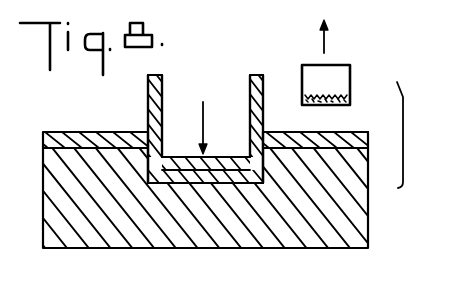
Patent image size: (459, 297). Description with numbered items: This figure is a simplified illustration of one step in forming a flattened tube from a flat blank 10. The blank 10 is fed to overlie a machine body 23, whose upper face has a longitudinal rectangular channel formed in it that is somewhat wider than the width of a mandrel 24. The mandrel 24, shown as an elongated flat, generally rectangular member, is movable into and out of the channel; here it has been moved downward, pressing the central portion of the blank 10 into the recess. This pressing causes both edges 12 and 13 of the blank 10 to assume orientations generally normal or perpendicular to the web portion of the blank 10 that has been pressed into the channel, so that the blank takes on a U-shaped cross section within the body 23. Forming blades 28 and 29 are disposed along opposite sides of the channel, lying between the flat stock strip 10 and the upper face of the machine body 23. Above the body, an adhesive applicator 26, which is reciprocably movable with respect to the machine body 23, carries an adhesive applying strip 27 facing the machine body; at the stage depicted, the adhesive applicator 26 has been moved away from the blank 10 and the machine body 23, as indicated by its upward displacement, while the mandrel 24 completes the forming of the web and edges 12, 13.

The flat blank 10 is at (180, 111).
The edge 12 is at (162, 85).
The edge 13 is at (251, 77).
The machine body 23 is at (372, 215).
The mandrel 24 is at (227, 157).
The adhesive applicator 26 is at (352, 70).
The adhesive applying strip 27 is at (350, 100).
The forming blade 28 is at (72, 132).
The forming blade 29 is at (370, 137).